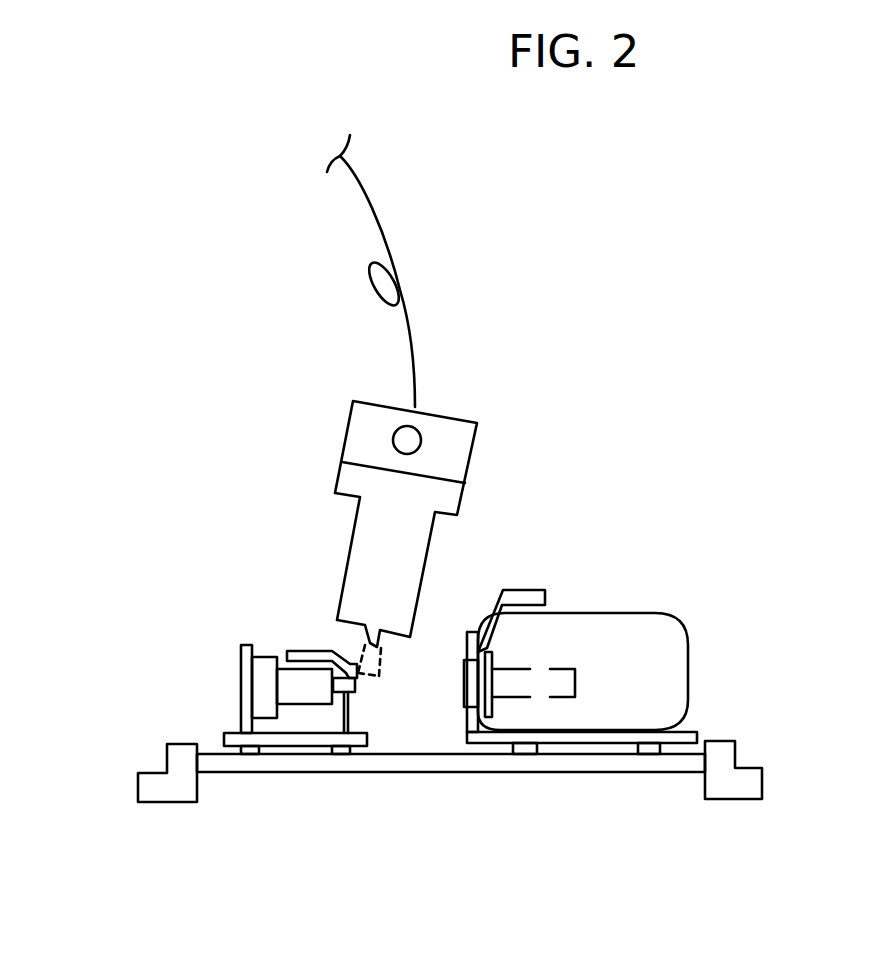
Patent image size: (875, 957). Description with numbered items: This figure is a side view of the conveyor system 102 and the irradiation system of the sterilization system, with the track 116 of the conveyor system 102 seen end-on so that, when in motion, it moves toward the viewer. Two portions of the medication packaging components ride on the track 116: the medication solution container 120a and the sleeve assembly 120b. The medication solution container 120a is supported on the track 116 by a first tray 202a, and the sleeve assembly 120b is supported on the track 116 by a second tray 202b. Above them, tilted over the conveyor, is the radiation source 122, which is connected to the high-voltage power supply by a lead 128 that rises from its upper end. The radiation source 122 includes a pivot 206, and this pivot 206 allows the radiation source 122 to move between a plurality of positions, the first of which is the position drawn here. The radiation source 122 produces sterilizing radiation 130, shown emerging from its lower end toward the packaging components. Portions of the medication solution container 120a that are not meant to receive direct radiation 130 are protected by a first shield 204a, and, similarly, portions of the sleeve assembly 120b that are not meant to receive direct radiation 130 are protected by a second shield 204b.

The conveyor system 102 is at (249, 824).
The track 116 is at (570, 772).
The medication solution container 120a is at (633, 613).
The sleeve assembly 120b is at (265, 657).
The radiation source 122 is at (450, 413).
The lead 128 is at (380, 212).
The sterilizing radiation 130 is at (366, 674).
The first tray 202a is at (697, 732).
The second tray 202b is at (224, 738).
The first shield 204a is at (538, 590).
The second shield 204b is at (308, 651).
The pivot 206 is at (393, 440).